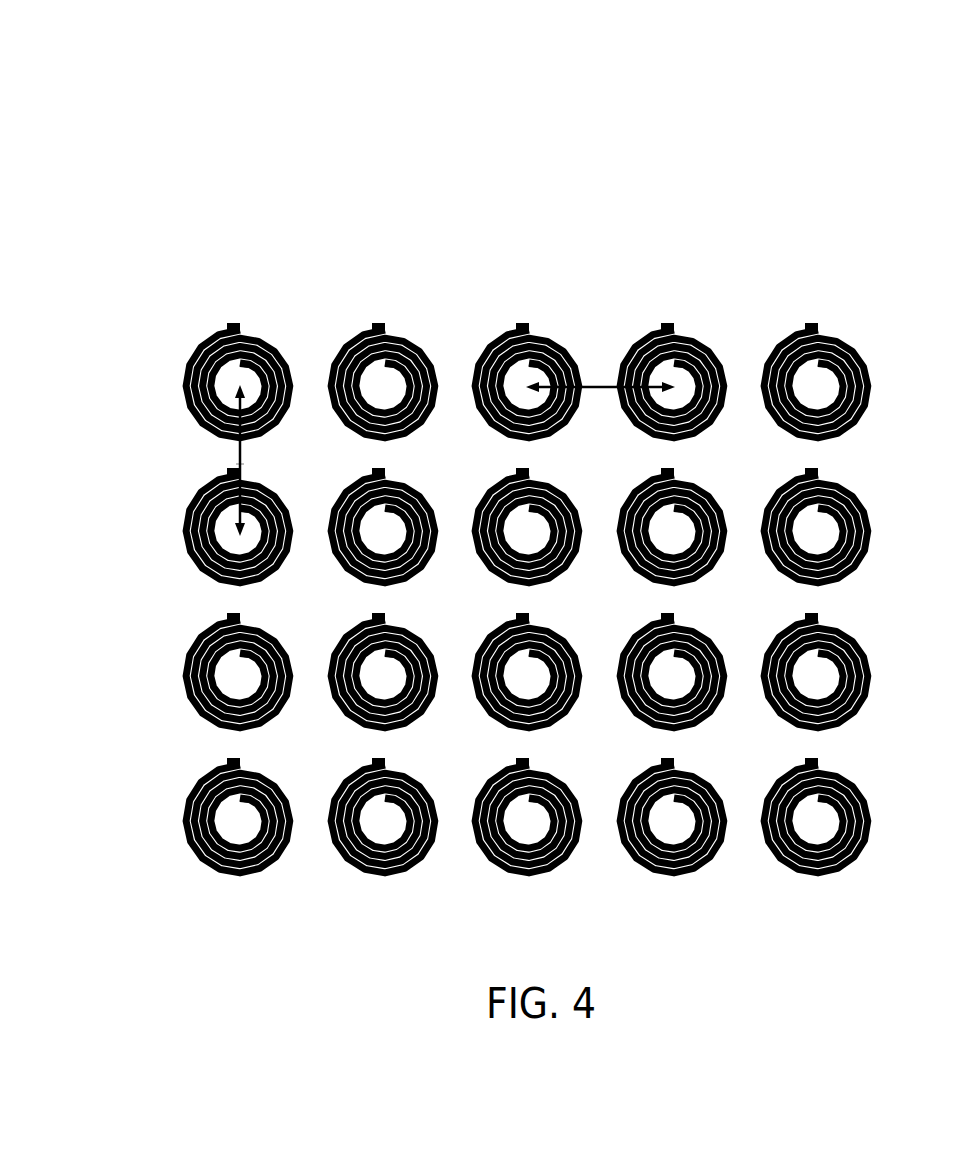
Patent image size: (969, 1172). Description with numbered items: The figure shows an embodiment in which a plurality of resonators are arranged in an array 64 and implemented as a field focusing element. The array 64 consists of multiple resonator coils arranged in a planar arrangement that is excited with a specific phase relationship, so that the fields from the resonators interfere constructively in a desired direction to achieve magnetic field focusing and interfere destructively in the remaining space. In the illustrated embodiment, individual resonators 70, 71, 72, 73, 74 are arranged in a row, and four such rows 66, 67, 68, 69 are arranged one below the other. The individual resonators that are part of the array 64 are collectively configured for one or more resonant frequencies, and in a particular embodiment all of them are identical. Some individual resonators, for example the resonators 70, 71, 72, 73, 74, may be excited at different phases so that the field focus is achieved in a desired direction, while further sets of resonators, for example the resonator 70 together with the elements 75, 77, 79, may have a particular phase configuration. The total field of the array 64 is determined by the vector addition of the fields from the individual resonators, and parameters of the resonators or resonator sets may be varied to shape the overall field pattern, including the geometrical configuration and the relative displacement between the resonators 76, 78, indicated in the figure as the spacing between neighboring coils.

The array 64 is at (114, 81).
The row of resonators 66 is at (136, 375).
The row of resonators 67 is at (136, 518).
The row of resonators 68 is at (136, 665).
The row of resonators 69 is at (136, 810).
The individual resonator 70 is at (243, 321).
The individual resonator 71 is at (388, 321).
The individual resonator 72 is at (539, 321).
The individual resonator 73 is at (681, 321).
The individual resonator 74 is at (828, 321).
The resonator set element 75 is at (240, 476).
The relative displacement between resonators 76 is at (588, 378).
The individual resonator 77 is at (255, 614).
The relative displacement between resonators 78 is at (230, 462).
The individual resonator 79 is at (255, 762).